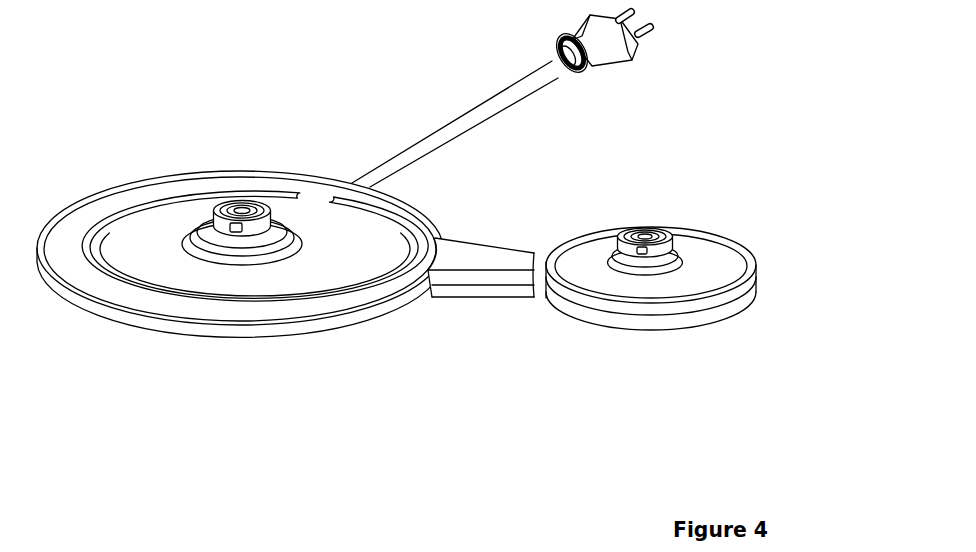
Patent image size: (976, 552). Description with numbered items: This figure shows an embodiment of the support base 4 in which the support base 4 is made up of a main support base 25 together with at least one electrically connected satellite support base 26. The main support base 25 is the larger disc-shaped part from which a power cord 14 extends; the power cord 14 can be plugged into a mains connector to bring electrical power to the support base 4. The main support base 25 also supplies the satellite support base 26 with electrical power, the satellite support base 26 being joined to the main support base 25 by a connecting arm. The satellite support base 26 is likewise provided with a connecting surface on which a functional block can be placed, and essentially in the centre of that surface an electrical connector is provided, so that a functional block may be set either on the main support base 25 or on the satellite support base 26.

The support base 4 is at (190, 362).
The main support base 25 is at (307, 335).
The power cord 14 is at (510, 104).
The satellite support base 26 is at (690, 323).